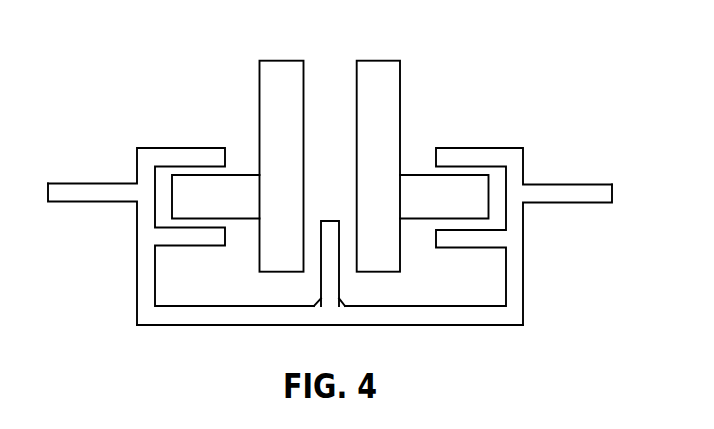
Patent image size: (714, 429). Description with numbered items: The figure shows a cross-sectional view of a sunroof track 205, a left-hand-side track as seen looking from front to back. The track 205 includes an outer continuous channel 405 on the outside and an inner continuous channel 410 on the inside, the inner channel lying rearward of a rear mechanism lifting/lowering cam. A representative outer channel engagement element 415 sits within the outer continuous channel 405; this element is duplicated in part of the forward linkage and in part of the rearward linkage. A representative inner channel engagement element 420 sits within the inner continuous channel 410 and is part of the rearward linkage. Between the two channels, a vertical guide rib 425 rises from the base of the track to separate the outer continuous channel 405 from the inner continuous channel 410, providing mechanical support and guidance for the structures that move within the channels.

The sunroof track 205 is at (557, 58).
The outer continuous channel 405 is at (163, 185).
The inner continuous channel 410 is at (496, 183).
The outer channel engagement element 415 is at (260, 93).
The inner channel engagement element 420 is at (400, 93).
The vertical guide rib 425 is at (328, 283).